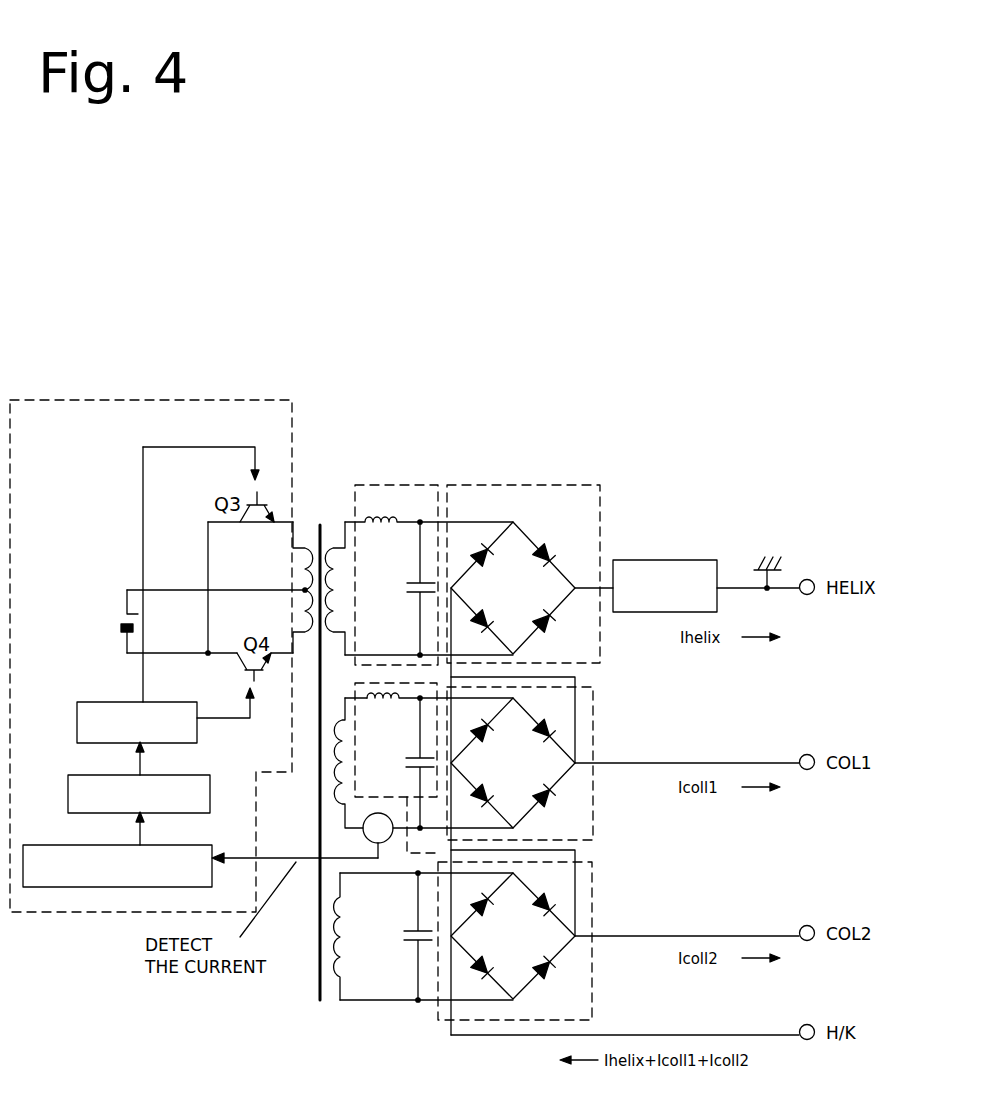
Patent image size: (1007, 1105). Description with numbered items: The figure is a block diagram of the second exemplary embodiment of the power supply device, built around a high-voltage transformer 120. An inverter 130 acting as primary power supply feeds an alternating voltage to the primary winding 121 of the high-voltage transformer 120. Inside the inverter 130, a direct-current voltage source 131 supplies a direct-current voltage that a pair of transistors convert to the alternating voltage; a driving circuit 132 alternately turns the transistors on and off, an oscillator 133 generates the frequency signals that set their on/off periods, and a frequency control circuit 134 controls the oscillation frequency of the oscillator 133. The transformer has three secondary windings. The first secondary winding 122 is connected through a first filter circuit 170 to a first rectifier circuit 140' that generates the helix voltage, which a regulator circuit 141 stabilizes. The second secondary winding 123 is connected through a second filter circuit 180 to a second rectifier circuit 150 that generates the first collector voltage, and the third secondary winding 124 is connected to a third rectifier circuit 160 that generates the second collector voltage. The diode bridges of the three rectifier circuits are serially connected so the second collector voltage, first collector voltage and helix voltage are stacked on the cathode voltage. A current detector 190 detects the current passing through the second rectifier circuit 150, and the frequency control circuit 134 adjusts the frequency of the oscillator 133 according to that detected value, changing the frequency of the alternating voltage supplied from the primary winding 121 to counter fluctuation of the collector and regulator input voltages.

The inverter 130 is at (206, 399).
The direct-current voltage source 131 is at (121, 614).
The driving circuit 132 is at (116, 702).
The oscillator 133 is at (98, 775).
The frequency control circuit 134 is at (82, 845).
The high-voltage transformer 120 is at (322, 520).
The primary winding 121 is at (308, 602).
The first secondary winding 122 is at (341, 602).
The second secondary winding 123 is at (330, 790).
The third secondary winding 124 is at (325, 1006).
The first filter circuit 170 is at (380, 485).
The second filter circuit 180 is at (355, 697).
The current detector 190 is at (363, 836).
The first rectifier circuit 140' is at (523, 544).
The regulator circuit 141 is at (663, 560).
The second rectifier circuit 150 is at (593, 688).
The third rectifier circuit 160 is at (592, 868).